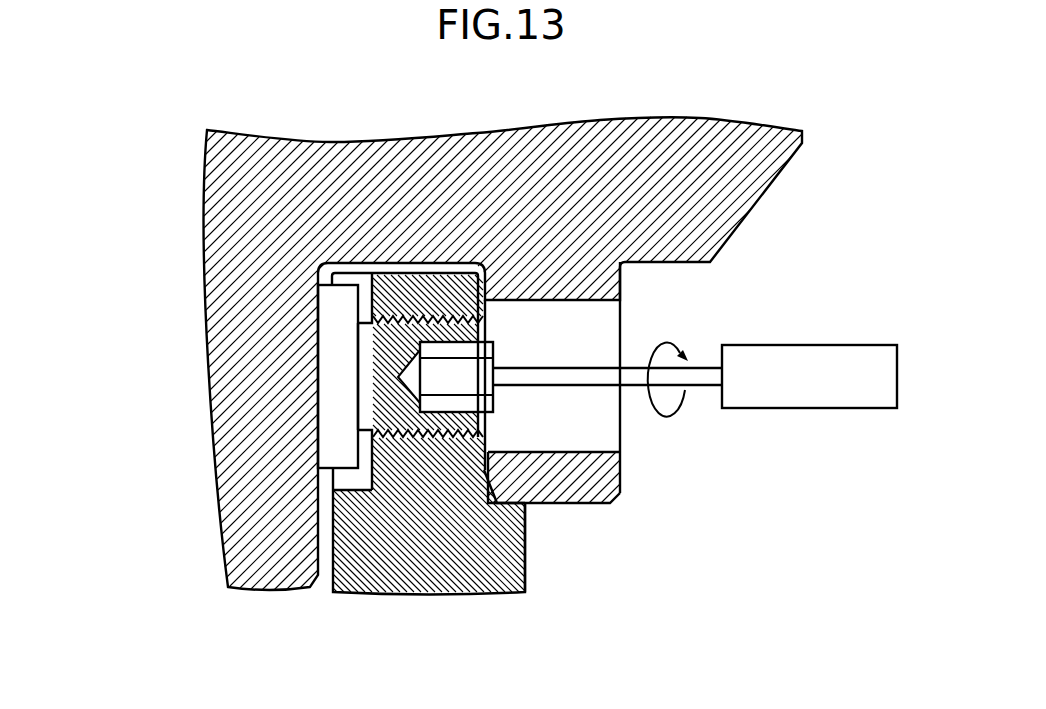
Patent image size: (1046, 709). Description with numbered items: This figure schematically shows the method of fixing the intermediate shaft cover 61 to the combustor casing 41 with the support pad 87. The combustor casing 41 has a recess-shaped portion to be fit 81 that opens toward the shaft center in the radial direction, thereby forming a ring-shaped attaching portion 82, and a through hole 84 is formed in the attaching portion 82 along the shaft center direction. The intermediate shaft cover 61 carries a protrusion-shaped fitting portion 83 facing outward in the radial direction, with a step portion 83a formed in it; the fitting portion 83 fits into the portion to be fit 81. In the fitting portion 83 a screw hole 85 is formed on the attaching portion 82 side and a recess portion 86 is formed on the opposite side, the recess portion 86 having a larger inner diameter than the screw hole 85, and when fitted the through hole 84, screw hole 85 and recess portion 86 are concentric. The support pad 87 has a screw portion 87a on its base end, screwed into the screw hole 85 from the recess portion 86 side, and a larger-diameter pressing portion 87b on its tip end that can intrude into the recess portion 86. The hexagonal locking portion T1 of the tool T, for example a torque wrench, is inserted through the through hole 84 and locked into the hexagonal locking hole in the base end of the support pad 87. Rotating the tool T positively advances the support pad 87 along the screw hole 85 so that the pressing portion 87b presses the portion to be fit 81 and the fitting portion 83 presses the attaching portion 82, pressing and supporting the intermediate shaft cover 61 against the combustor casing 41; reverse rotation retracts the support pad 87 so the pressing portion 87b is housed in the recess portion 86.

The combustor casing 41 is at (777, 187).
The intermediate shaft cover 61 is at (540, 562).
The portion to be fit 81 is at (414, 260).
The attaching portion 82 is at (604, 478).
The fitting portion 83 is at (388, 287).
The step portion 83a is at (520, 498).
The through hole 84 is at (596, 303).
The screw hole 85 is at (425, 440).
The recess portion 86 is at (370, 455).
The support pad 87 is at (306, 310).
The screw portion 87a is at (457, 440).
The pressing portion 87b is at (335, 377).
The tool T is at (808, 344).
The locking portion T1 is at (454, 370).